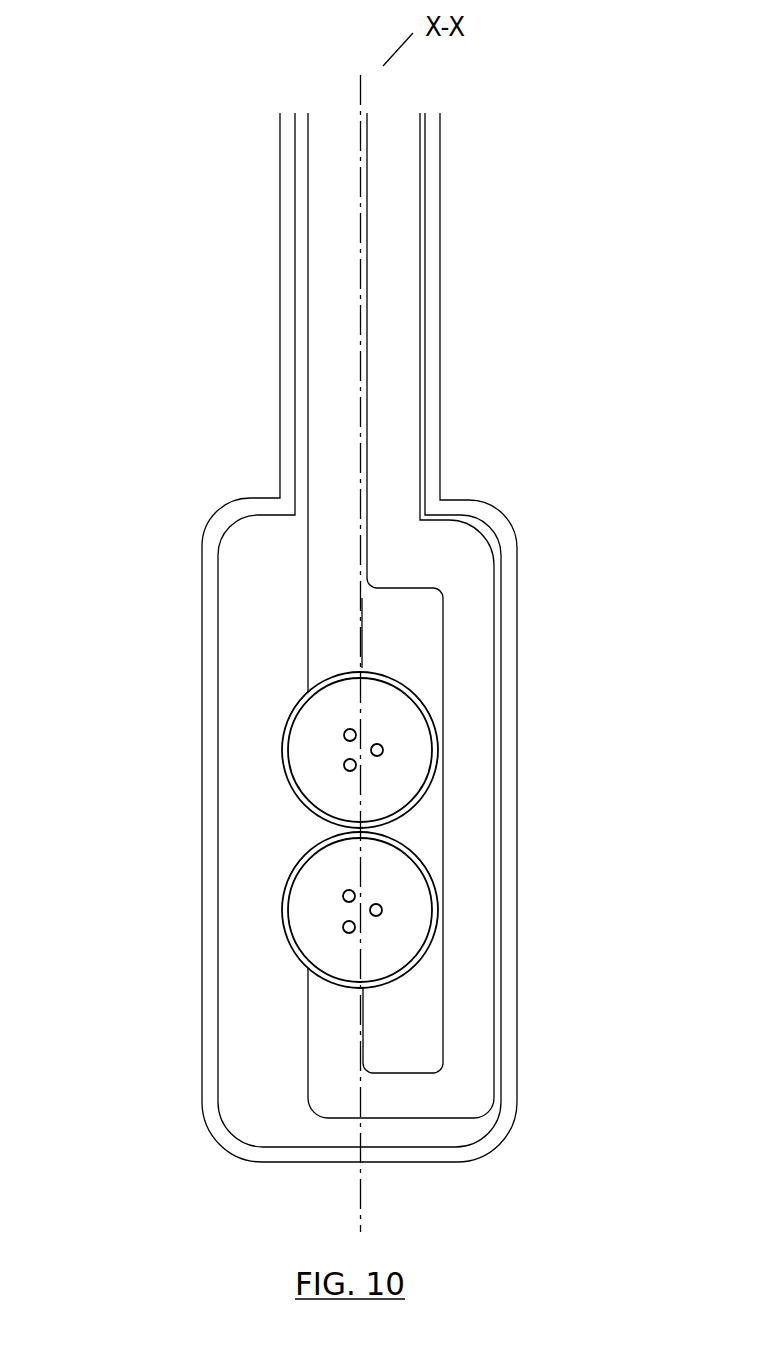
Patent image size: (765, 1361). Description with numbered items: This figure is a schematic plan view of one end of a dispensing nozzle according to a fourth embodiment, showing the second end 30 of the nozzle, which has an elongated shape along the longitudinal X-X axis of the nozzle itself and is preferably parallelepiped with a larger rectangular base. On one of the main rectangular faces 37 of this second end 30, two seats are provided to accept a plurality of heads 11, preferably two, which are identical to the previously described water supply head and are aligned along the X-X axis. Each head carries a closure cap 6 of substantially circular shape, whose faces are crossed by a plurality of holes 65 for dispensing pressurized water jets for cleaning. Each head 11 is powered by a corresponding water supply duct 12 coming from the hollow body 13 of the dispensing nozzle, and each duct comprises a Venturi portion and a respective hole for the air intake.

The closure cap 6 is at (316, 722).
The heads 11 is at (263, 892).
The water supply duct 12 is at (344, 373).
The hollow body 13 is at (280, 155).
The second end 30 is at (173, 502).
The main rectangular face 37 is at (257, 1020).
The holes for the dispensing of pressurized water jets 65 is at (358, 722).